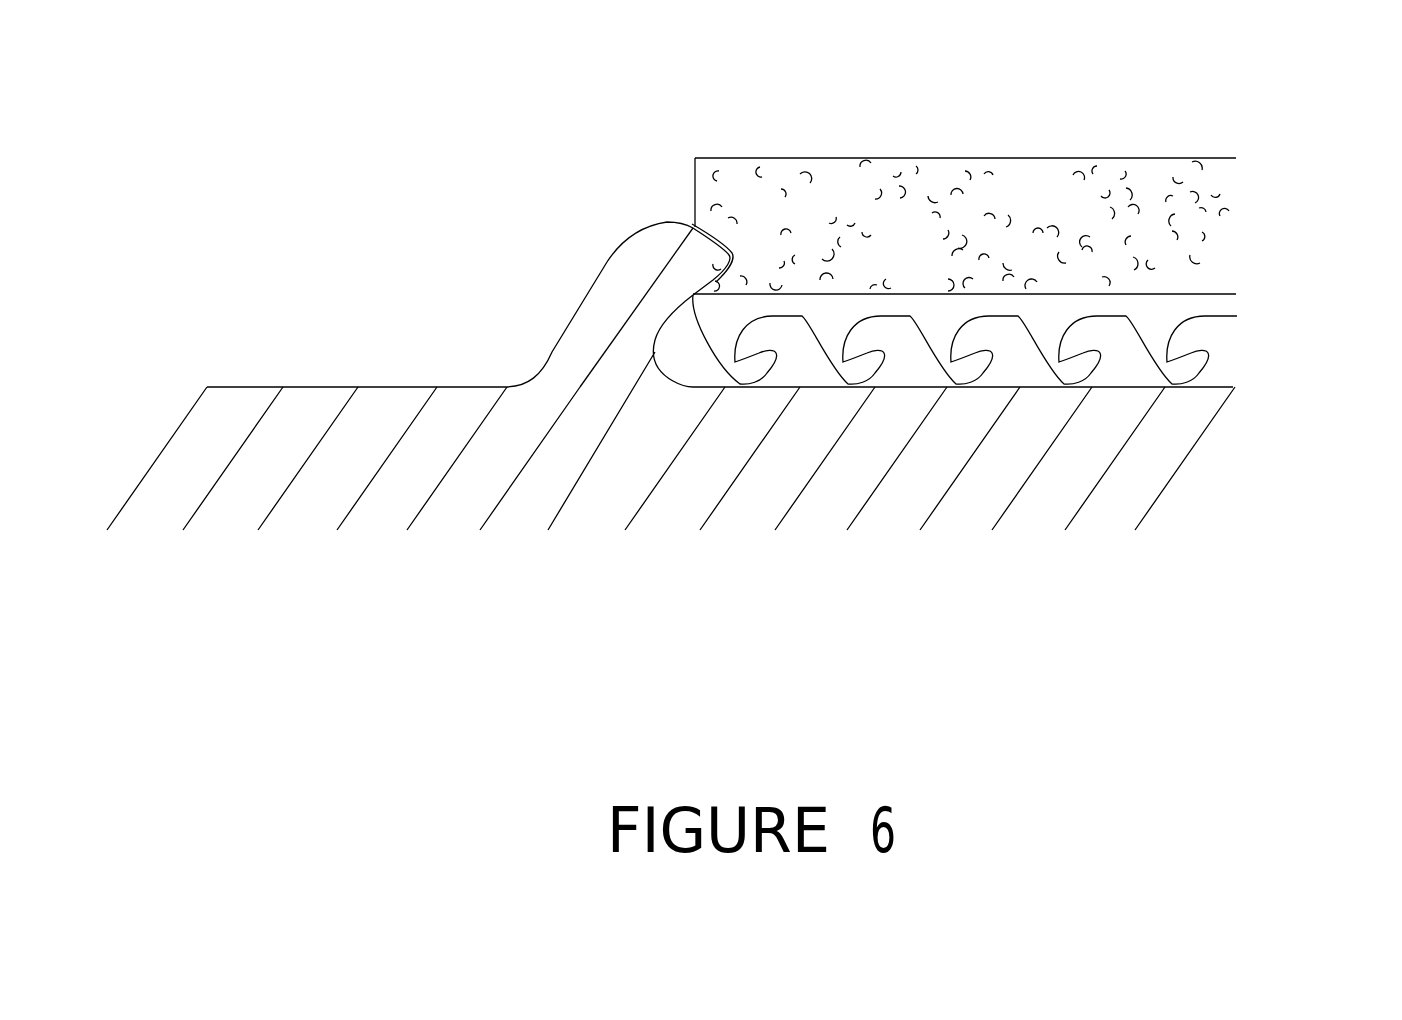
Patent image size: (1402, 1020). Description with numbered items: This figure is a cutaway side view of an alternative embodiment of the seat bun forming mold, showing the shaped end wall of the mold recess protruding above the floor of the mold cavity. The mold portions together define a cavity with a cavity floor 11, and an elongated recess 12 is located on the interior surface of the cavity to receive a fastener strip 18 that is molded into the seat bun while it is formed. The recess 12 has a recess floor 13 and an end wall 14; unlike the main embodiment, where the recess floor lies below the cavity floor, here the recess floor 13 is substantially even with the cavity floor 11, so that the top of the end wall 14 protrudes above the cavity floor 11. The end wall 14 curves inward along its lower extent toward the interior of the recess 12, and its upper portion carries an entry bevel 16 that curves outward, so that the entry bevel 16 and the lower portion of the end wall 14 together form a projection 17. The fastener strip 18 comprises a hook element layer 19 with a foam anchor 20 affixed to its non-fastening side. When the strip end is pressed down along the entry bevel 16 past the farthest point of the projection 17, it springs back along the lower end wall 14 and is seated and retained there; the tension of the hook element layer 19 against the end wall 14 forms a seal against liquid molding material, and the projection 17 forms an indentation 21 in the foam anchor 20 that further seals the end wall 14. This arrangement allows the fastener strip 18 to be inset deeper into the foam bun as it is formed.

The cavity floor 11 is at (309, 363).
The elongated recess 12 is at (1255, 347).
The recess floor 13 is at (1203, 393).
The end wall 14 is at (641, 352).
The entry bevel 16 is at (700, 234).
The projection 17 is at (717, 257).
The fastener strip 18 is at (1252, 269).
The hook element layer 19 is at (952, 318).
The foam anchor 20 is at (1017, 150).
The indentation 21 is at (730, 233).